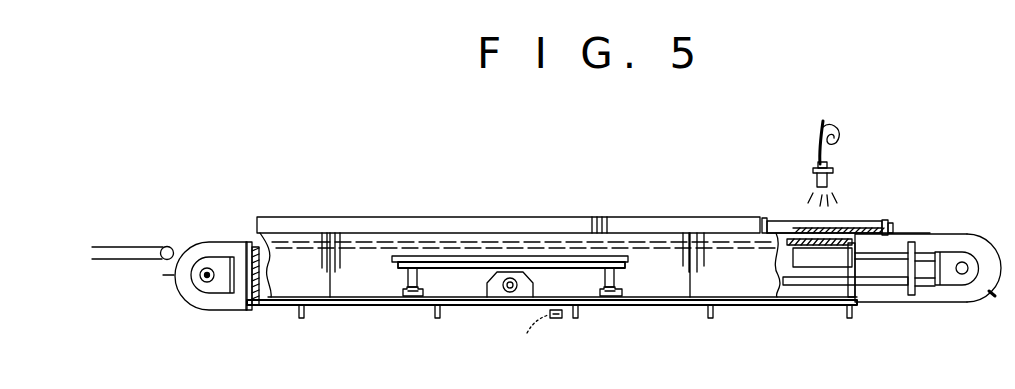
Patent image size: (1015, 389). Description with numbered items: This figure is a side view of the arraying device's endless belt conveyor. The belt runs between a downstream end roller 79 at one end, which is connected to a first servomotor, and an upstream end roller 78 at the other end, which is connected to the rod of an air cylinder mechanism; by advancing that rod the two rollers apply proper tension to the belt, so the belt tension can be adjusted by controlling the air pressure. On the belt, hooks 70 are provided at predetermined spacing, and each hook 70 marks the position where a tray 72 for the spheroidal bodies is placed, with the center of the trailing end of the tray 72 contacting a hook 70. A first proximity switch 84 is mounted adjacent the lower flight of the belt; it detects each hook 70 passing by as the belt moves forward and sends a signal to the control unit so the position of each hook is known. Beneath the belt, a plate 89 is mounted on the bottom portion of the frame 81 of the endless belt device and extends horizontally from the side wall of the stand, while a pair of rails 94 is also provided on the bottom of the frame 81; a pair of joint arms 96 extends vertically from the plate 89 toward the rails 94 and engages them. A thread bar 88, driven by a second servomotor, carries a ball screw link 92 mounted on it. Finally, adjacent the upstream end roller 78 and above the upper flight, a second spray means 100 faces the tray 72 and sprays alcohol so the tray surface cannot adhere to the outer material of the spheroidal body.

The hook 70 is at (897, 224).
The tray 72 is at (877, 219).
The upstream end roller 78 is at (962, 252).
The downstream end roller 79 is at (212, 250).
The frame 81 is at (252, 311).
The first proximity switch 84 is at (560, 318).
The thread bar 88 is at (506, 292).
The plate 89 is at (582, 268).
The ball screw link 92 is at (490, 285).
The rails 94 is at (412, 297).
The joint arms 96 is at (404, 279).
The second spray means 100 is at (833, 174).